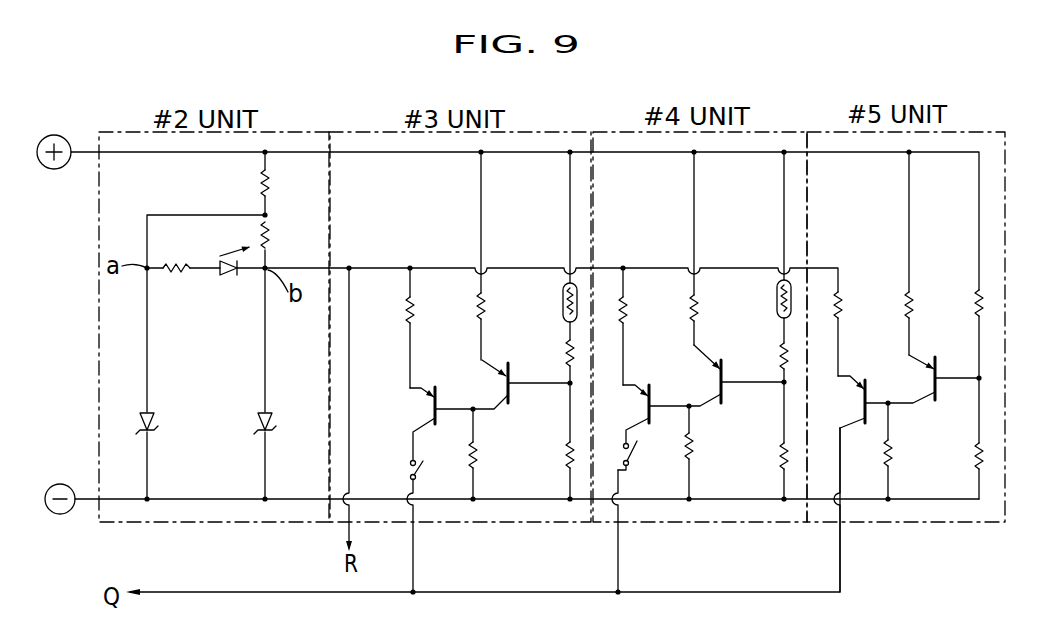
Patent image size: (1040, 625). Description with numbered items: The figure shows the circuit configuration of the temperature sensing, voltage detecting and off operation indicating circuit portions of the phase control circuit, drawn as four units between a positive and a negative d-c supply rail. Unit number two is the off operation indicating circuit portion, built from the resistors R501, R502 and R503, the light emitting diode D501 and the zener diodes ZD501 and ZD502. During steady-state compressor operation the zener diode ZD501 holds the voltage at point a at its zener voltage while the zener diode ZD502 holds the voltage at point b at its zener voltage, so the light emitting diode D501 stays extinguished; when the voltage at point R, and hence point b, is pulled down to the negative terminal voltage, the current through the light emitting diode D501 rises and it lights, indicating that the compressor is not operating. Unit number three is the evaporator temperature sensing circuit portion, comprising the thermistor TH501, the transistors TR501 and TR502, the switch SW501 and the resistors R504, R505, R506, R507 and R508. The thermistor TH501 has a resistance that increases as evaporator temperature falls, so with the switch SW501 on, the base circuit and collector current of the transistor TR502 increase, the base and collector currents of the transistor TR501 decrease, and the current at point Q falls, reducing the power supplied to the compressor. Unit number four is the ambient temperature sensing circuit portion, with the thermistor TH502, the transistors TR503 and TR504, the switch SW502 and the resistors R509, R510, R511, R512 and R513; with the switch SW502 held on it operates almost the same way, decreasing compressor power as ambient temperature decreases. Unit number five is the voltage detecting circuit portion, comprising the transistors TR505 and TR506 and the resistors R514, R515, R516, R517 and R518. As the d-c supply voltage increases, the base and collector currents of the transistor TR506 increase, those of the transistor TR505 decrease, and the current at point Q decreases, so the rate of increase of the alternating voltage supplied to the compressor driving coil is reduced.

The resistor R501 is at (261, 185).
The resistor R502 is at (259, 236).
The resistor R503 is at (175, 273).
The light emitting diode D501 is at (228, 278).
The zener diode ZD501 is at (156, 426).
The zener diode ZD502 is at (262, 416).
The resistor R504 is at (412, 300).
The resistor R505 is at (477, 313).
The resistor R506 is at (568, 350).
The resistor R507 is at (568, 460).
The resistor R508 is at (479, 450).
The thermistor TH501 is at (562, 302).
The transistor TR501 is at (430, 403).
The transistor TR502 is at (495, 393).
The switch SW501 is at (407, 462).
The resistor R509 is at (625, 310).
The resistor R510 is at (700, 310).
The resistor R511 is at (783, 368).
The resistor R512 is at (787, 445).
The resistor R513 is at (697, 447).
The thermistor TH502 is at (777, 300).
The transistor TR503 is at (632, 387).
The transistor TR504 is at (715, 367).
The switch SW502 is at (633, 453).
The resistor R514 is at (838, 297).
The resistor R515 is at (910, 297).
The resistor R516 is at (978, 307).
The resistor R517 is at (978, 452).
The resistor R518 is at (897, 460).
The transistor TR505 is at (845, 378).
The transistor TR506 is at (927, 382).